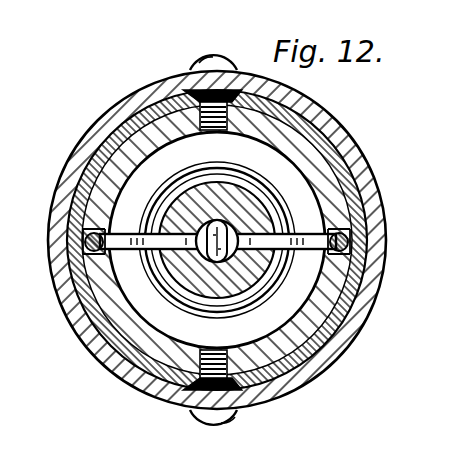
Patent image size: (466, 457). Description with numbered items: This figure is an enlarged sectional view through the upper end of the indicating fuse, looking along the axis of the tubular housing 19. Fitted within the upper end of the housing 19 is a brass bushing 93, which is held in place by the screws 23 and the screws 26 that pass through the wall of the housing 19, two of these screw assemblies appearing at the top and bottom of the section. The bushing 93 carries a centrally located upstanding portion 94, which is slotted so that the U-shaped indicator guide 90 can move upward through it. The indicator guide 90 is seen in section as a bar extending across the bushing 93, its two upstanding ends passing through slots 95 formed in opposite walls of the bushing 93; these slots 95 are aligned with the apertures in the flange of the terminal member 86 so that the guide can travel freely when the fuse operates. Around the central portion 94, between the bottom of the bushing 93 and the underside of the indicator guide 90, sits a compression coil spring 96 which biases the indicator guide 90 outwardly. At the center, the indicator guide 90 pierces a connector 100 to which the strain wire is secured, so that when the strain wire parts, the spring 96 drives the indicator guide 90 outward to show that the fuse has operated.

The housing 19 is at (351, 183).
The screws 23 is at (203, 58).
The screws 26 is at (185, 100).
The terminal member 86 is at (356, 154).
The indicator guide 90 is at (352, 238).
The bushing 93 is at (343, 212).
The upstanding portion 94 is at (190, 192).
The slots 95 is at (82, 240).
The compression coil spring 96 is at (281, 274).
The connector 100 is at (222, 257).